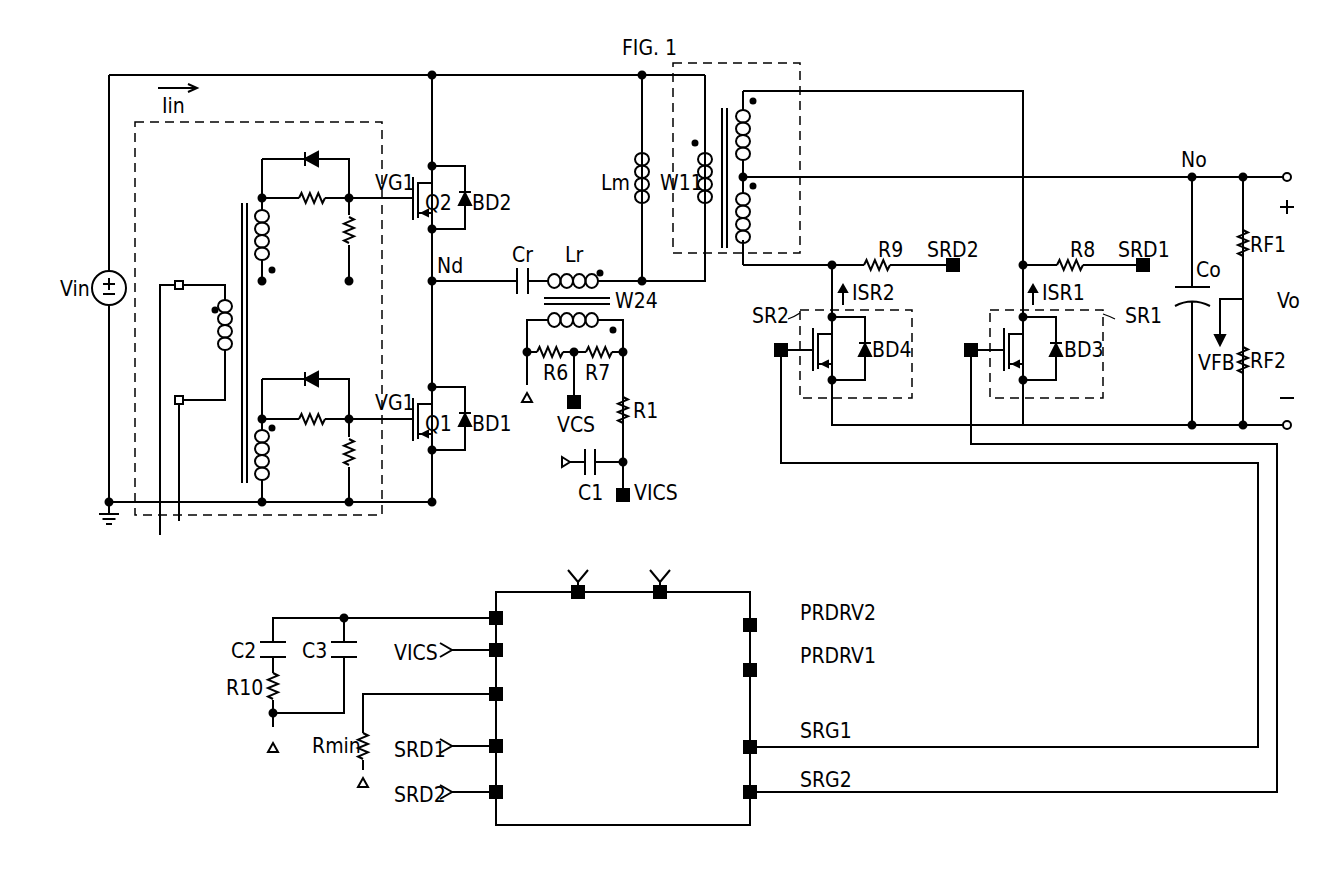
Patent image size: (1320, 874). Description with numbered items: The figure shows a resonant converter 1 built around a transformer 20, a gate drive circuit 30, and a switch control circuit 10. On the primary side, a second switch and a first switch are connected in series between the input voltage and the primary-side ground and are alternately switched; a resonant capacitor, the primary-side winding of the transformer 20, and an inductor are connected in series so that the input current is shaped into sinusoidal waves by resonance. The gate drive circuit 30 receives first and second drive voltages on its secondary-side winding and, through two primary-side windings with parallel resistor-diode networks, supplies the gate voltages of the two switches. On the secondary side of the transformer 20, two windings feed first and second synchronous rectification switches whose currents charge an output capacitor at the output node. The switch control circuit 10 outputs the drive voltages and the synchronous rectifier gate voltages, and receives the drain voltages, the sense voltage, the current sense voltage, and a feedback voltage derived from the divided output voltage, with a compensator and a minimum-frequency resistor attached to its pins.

The resonant converter 1 is at (1114, 79).
The switch control circuit 10 is at (750, 822).
The transformer 20 is at (808, 74).
The gate drive circuit 30 is at (268, 118).